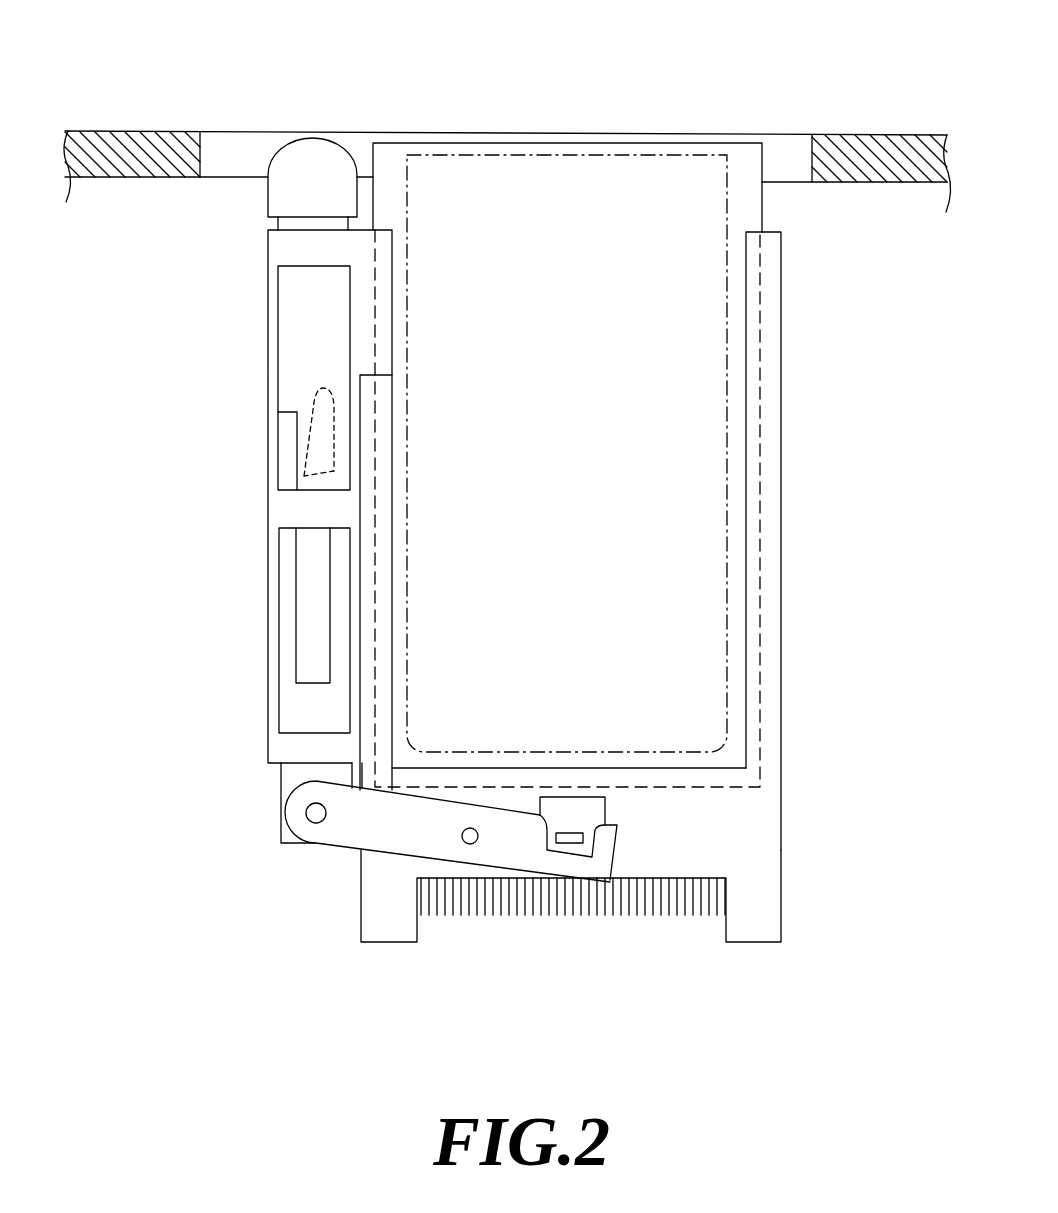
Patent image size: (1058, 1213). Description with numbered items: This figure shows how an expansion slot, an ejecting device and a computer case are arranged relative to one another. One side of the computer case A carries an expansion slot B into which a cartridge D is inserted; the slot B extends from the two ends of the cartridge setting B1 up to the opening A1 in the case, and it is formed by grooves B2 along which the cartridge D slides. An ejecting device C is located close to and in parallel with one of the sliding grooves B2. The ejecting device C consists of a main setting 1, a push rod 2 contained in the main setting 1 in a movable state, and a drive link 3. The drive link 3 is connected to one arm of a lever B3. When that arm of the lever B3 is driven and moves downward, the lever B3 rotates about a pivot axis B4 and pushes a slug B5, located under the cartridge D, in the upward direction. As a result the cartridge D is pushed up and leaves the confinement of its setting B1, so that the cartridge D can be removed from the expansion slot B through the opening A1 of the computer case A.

The computer case A is at (862, 166).
The opening A1 is at (782, 146).
The expansion slot B is at (557, 90).
The cartridge setting B1 is at (770, 849).
The grooves B2 is at (389, 488).
The lever B3 is at (343, 832).
The pivot axis B4 is at (470, 845).
The slug B5 is at (574, 832).
The ejecting device C is at (184, 493).
The cartridge D is at (626, 166).
The main setting 1 is at (279, 250).
The push rod 2 is at (310, 150).
The drive link 3 is at (291, 777).